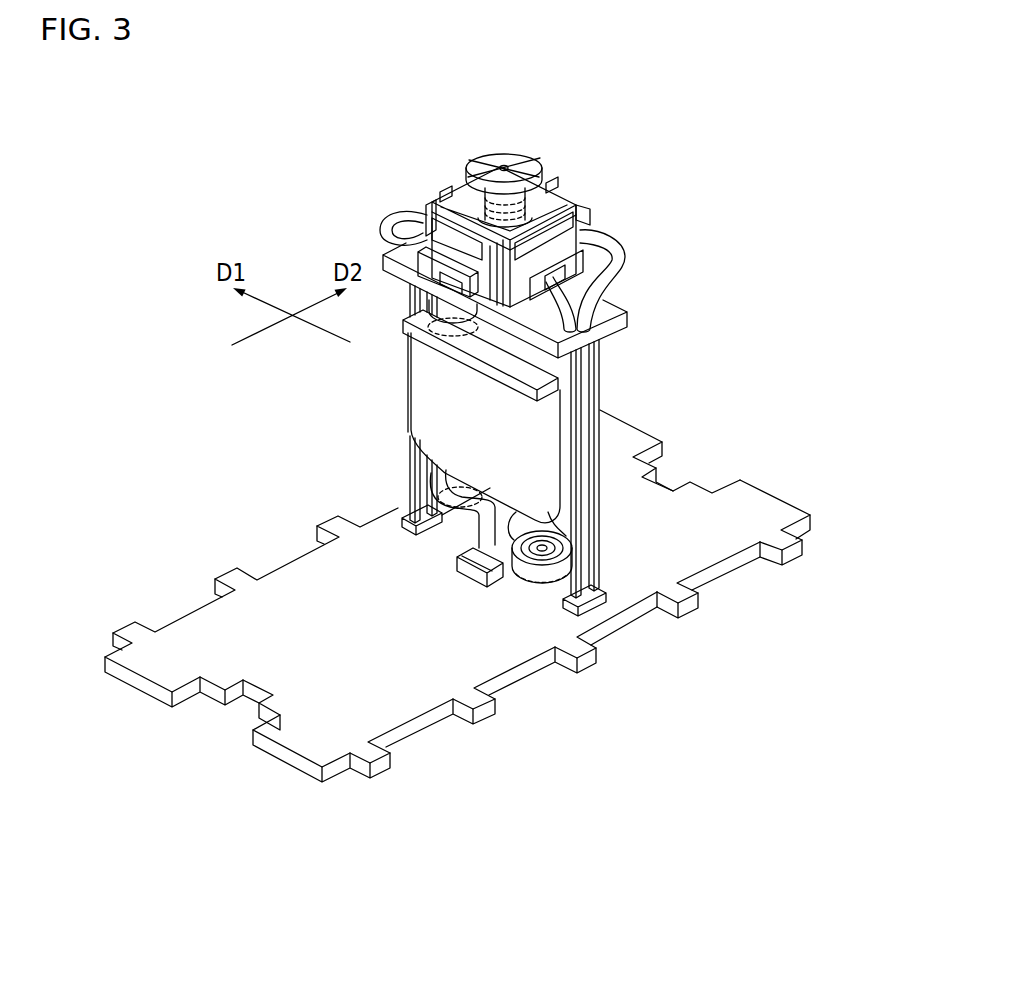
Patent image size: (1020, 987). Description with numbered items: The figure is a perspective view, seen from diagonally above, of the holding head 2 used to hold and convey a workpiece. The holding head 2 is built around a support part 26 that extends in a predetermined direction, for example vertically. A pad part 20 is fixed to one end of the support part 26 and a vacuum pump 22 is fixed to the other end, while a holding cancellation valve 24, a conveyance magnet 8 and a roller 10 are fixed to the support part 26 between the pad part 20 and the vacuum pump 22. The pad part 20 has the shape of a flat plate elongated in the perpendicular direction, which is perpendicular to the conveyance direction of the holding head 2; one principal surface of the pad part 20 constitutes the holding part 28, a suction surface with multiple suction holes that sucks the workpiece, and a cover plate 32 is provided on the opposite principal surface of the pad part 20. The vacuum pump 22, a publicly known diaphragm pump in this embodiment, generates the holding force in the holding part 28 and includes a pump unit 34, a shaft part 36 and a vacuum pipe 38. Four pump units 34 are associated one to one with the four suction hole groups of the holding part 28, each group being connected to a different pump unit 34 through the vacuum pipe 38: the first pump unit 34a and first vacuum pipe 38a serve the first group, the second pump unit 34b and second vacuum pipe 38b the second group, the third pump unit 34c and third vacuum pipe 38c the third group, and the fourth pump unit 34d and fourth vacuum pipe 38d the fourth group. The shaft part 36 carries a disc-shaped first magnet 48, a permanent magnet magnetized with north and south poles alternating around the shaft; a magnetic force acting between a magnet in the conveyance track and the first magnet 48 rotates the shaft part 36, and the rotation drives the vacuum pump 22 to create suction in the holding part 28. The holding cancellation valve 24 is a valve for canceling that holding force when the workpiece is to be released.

The holding head 2 is at (545, 817).
The conveyance magnet 8 is at (430, 383).
The roller 10 is at (437, 324).
The pad part 20 is at (814, 511).
The vacuum pump 22 is at (570, 186).
The holding cancellation valve 24 is at (630, 313).
The support part 26 is at (394, 420).
The holding part 28 is at (722, 572).
The cover plate 32 is at (755, 493).
The pump unit 34 is at (498, 161).
The first pump unit 34a is at (430, 202).
The second pump unit 34b is at (445, 190).
The third pump unit 34c is at (590, 206).
The fourth pump unit 34d is at (552, 180).
The shaft part 36 is at (450, 190).
The vacuum pipe 38 is at (515, 496).
The first vacuum pipe 38a is at (414, 488).
The second vacuum pipe 38b is at (426, 460).
The third vacuum pipe 38c is at (593, 576).
The fourth vacuum pipe 38d is at (597, 572).
The first magnet 48 is at (510, 152).